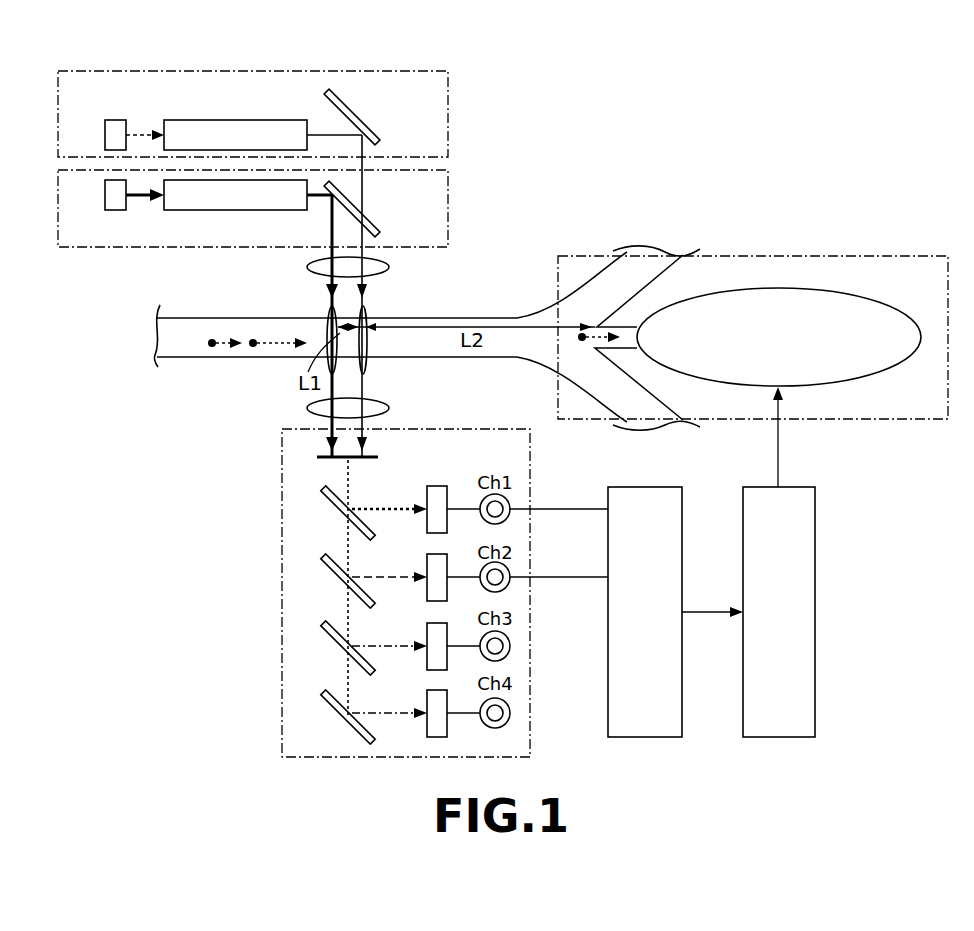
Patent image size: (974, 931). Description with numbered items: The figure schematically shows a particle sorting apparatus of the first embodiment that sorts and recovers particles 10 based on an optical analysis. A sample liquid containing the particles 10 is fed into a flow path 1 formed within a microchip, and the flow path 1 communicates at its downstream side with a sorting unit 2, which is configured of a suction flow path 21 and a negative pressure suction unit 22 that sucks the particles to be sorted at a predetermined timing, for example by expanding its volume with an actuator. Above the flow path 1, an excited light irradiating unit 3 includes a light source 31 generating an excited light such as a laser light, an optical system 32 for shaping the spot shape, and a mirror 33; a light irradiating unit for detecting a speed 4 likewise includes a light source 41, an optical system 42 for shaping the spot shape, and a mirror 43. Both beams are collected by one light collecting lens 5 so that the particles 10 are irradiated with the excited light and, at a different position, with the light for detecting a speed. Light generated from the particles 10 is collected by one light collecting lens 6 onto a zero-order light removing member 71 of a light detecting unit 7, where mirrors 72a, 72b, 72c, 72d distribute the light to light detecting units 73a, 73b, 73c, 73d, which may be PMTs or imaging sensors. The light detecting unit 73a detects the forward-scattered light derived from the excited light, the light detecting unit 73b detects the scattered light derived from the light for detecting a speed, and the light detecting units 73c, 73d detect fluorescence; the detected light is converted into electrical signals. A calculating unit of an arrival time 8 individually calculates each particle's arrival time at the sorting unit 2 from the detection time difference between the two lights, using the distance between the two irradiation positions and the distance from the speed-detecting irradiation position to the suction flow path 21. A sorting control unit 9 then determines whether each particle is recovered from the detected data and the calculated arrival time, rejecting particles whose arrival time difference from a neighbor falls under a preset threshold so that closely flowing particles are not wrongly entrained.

The flow path 1 is at (230, 359).
The particles 10 is at (254, 336).
The sorting unit 2 is at (828, 256).
The suction flow path 21 is at (633, 333).
The negative pressure suction unit 22 is at (748, 288).
The excited light irradiating unit 3 is at (78, 248).
The light source 31 is at (118, 212).
The optical system 32 is at (187, 212).
The mirror 33 is at (378, 218).
The light irradiating unit for detecting a speed 4 is at (448, 96).
The light source 41 is at (118, 120).
The optical system 42 is at (237, 120).
The mirror 43 is at (360, 100).
The light collecting lens 5 is at (389, 267).
The light collecting lens 6 is at (389, 408).
The light detecting unit 7 is at (282, 468).
The zero-order light removing member 71 is at (378, 457).
The mirror 72a is at (325, 500).
The mirror 72b is at (325, 568).
The mirror 72c is at (325, 636).
The mirror 72d is at (325, 704).
The light detecting unit 73a is at (427, 500).
The light detecting unit 73b is at (427, 568).
The light detecting unit 73c is at (427, 636).
The light detecting unit 73d is at (427, 704).
The calculating unit of an arrival time 8 is at (682, 700).
The sorting control unit 9 is at (815, 700).